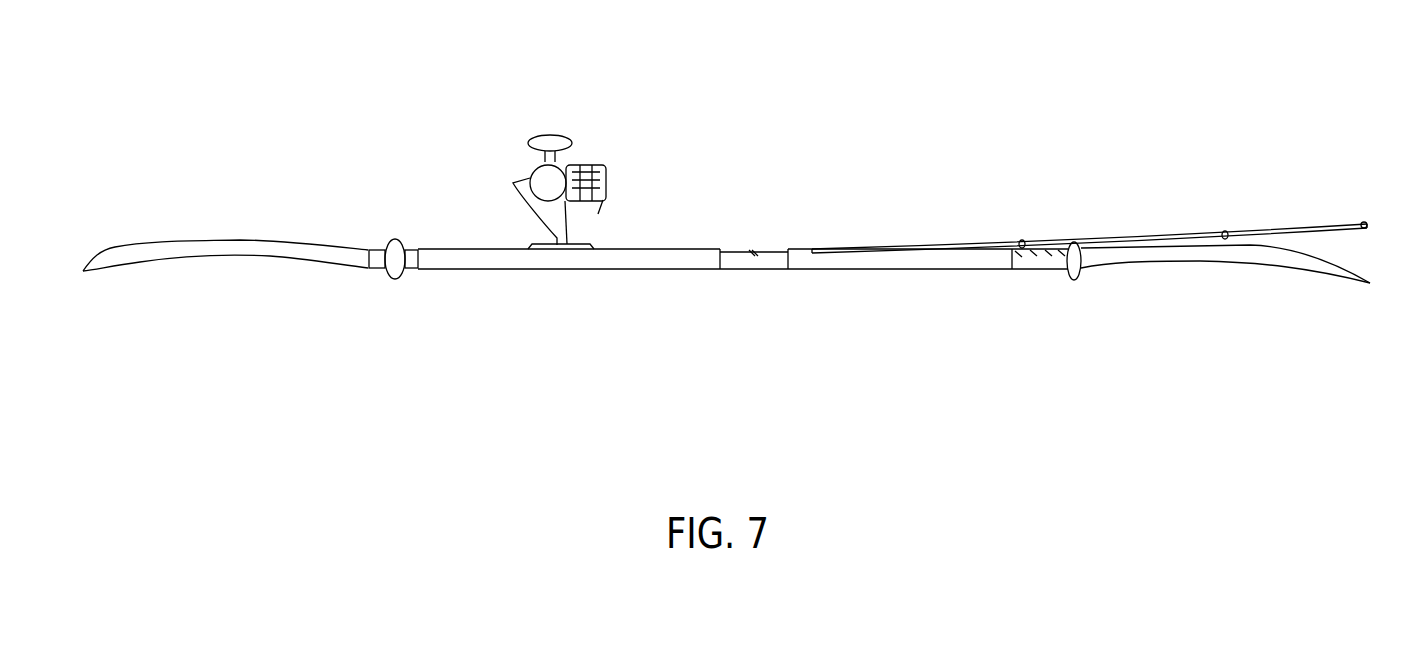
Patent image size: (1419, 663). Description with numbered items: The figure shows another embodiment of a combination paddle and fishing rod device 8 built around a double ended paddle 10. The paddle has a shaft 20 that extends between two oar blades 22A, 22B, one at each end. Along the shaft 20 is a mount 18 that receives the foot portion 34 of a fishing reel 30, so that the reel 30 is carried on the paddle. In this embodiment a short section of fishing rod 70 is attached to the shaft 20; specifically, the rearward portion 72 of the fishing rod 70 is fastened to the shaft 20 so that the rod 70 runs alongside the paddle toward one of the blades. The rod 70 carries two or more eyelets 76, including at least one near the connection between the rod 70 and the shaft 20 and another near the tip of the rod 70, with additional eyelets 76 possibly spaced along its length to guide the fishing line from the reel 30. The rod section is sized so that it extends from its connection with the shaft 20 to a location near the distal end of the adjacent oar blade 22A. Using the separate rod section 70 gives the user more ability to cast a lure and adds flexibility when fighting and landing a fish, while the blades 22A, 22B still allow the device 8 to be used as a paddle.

The combination paddle and fishing rod device 8 is at (567, 325).
The double ended paddle 10 is at (684, 242).
The mount 18 is at (527, 247).
The shaft 20 is at (808, 274).
The oar blade 22A is at (1193, 255).
The oar blade 22B is at (247, 245).
The fishing reel 30 is at (527, 172).
The foot portion 34 is at (565, 243).
The fishing rod 70 is at (1113, 232).
The rearward portion 72 is at (833, 248).
The eyelets 76 is at (1022, 240).